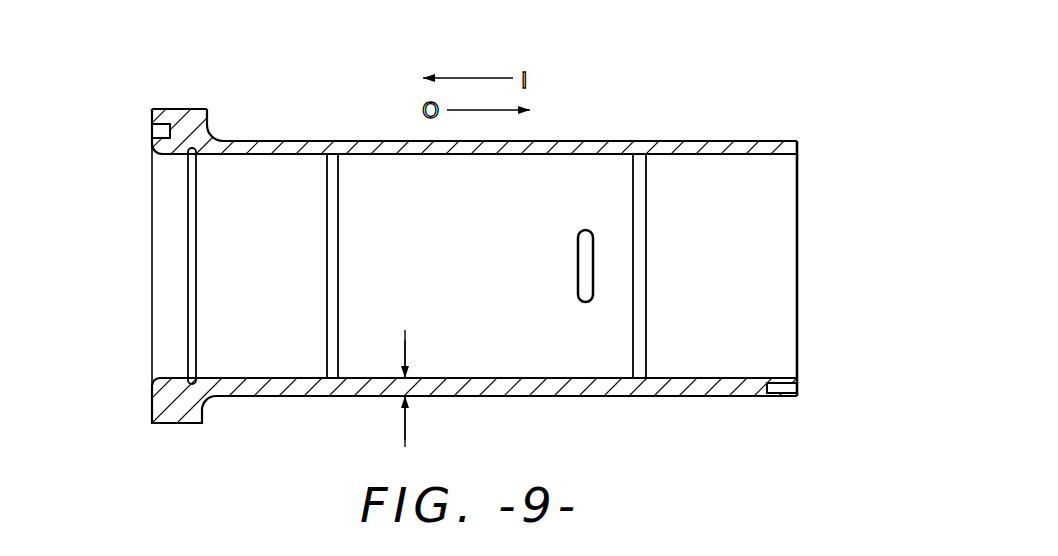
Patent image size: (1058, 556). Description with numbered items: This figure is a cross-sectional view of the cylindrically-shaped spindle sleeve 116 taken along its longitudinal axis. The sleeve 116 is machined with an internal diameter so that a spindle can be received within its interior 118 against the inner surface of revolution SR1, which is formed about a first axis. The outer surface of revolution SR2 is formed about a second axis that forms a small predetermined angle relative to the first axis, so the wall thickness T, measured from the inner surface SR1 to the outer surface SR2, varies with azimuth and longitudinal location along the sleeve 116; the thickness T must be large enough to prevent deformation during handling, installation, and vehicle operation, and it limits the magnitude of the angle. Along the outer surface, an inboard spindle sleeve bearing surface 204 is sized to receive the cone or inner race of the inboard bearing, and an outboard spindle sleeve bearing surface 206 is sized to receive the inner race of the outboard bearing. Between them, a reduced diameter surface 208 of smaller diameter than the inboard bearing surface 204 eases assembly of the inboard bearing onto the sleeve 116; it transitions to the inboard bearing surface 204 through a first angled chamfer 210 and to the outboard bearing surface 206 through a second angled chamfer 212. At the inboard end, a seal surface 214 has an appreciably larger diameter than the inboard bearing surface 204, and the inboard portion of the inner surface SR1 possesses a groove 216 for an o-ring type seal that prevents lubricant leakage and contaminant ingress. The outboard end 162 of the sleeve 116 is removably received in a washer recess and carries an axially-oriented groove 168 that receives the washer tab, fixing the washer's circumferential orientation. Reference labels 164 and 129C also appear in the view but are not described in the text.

The spindle sleeve 116 is at (529, 234).
The interior 118 is at (768, 243).
The notch 129C is at (147, 132).
The outboard end 162 is at (795, 127).
The forward flange 164 is at (156, 82).
The axially-oriented groove 168 is at (780, 393).
The inboard spindle sleeve bearing surface 204 is at (270, 137).
The outboard spindle sleeve bearing surface 206 is at (682, 398).
The reduced diameter surface 208 is at (482, 397).
The first angled chamfer 210 is at (338, 138).
The second angled chamfer 212 is at (638, 140).
The seal surface 214 is at (183, 107).
The groove 216 is at (197, 257).
The inner surface of revolution SR1 is at (458, 157).
The outer surface of revolution SR2 is at (573, 141).
The thickness T is at (404, 372).